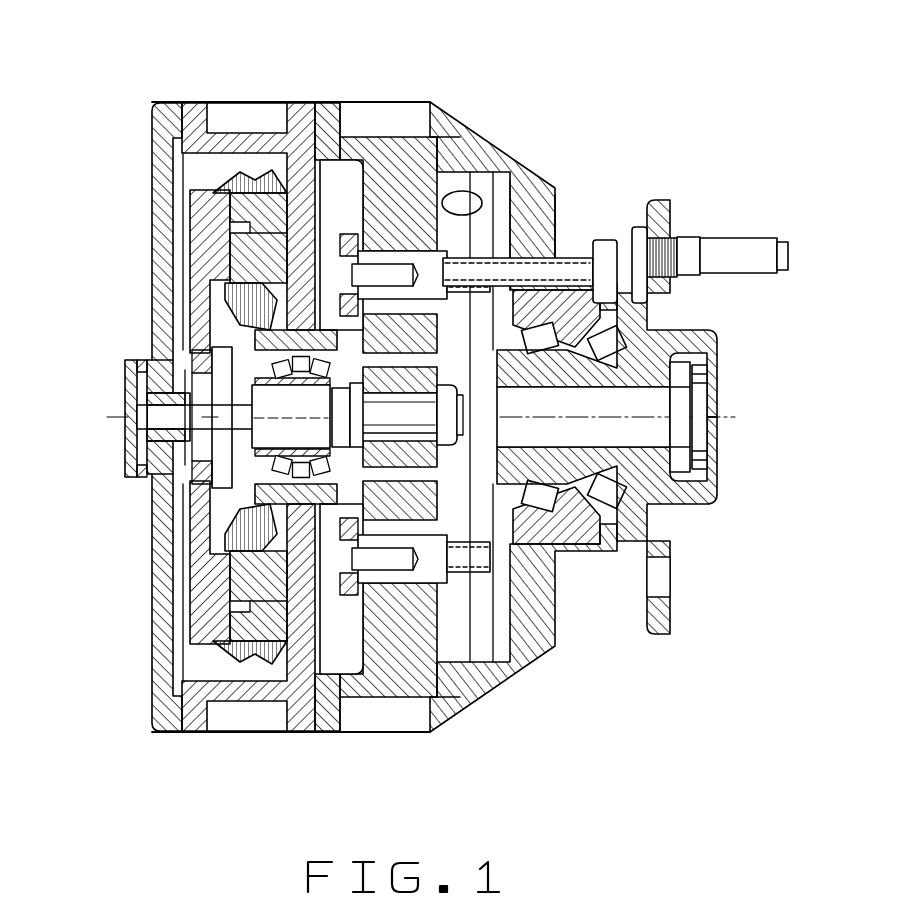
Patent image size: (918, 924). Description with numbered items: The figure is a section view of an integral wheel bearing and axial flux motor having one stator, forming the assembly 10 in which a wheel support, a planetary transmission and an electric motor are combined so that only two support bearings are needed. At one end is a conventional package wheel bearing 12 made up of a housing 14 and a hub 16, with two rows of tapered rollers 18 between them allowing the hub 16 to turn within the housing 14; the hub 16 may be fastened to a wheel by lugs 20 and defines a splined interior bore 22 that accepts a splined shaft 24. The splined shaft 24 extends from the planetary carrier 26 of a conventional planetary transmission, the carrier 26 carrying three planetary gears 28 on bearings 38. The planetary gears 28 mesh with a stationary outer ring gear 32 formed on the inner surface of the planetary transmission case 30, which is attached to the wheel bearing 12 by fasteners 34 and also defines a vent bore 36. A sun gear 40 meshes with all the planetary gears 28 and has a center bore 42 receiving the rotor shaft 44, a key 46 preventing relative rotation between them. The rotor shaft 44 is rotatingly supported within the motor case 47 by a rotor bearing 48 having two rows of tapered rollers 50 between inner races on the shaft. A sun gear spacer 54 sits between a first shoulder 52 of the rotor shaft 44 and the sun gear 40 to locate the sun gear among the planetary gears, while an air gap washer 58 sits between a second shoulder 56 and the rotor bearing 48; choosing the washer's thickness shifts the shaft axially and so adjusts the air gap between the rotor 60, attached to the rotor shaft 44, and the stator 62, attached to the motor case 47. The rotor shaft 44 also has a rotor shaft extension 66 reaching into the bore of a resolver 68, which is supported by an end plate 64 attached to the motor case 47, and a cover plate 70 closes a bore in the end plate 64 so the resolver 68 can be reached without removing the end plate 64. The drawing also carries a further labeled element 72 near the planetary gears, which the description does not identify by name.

The assembly 10 is at (620, 89).
The wheel bearing 12 is at (580, 220).
The housing 14 is at (590, 550).
The hub 16 is at (670, 613).
The tapered rollers 18 is at (540, 300).
The lugs 20 is at (787, 240).
The splined interior bore 22 is at (633, 400).
The splined shaft 24 is at (637, 433).
The planetary carrier 26 is at (476, 195).
The planetary gears 28 is at (343, 197).
The planetary transmission case 30 is at (453, 136).
The stationary outer ring gear 32 is at (487, 170).
The fasteners 34 is at (597, 250).
The vent bore 36 is at (510, 167).
The bearings 38 is at (397, 233).
The sun gear 40 is at (325, 520).
The center bore 42 is at (463, 430).
The rotor shaft 44 is at (278, 409).
The key 46 is at (350, 390).
The motor case 47 is at (297, 103).
The rotor bearing 48 is at (220, 397).
The tapered rollers 50 is at (187, 447).
The first shoulder 52 is at (308, 405).
The sun gear spacer 54 is at (336, 330).
The second shoulder 56 is at (163, 360).
The air gap washer 58 is at (228, 270).
The rotor 60 is at (190, 190).
The stator 62 is at (212, 652).
The end plate 64 is at (153, 100).
The rotor shaft extension 66 is at (137, 423).
The resolver 68 is at (143, 367).
The cover plate 70 is at (130, 477).
The pinion gear 72 is at (222, 188).